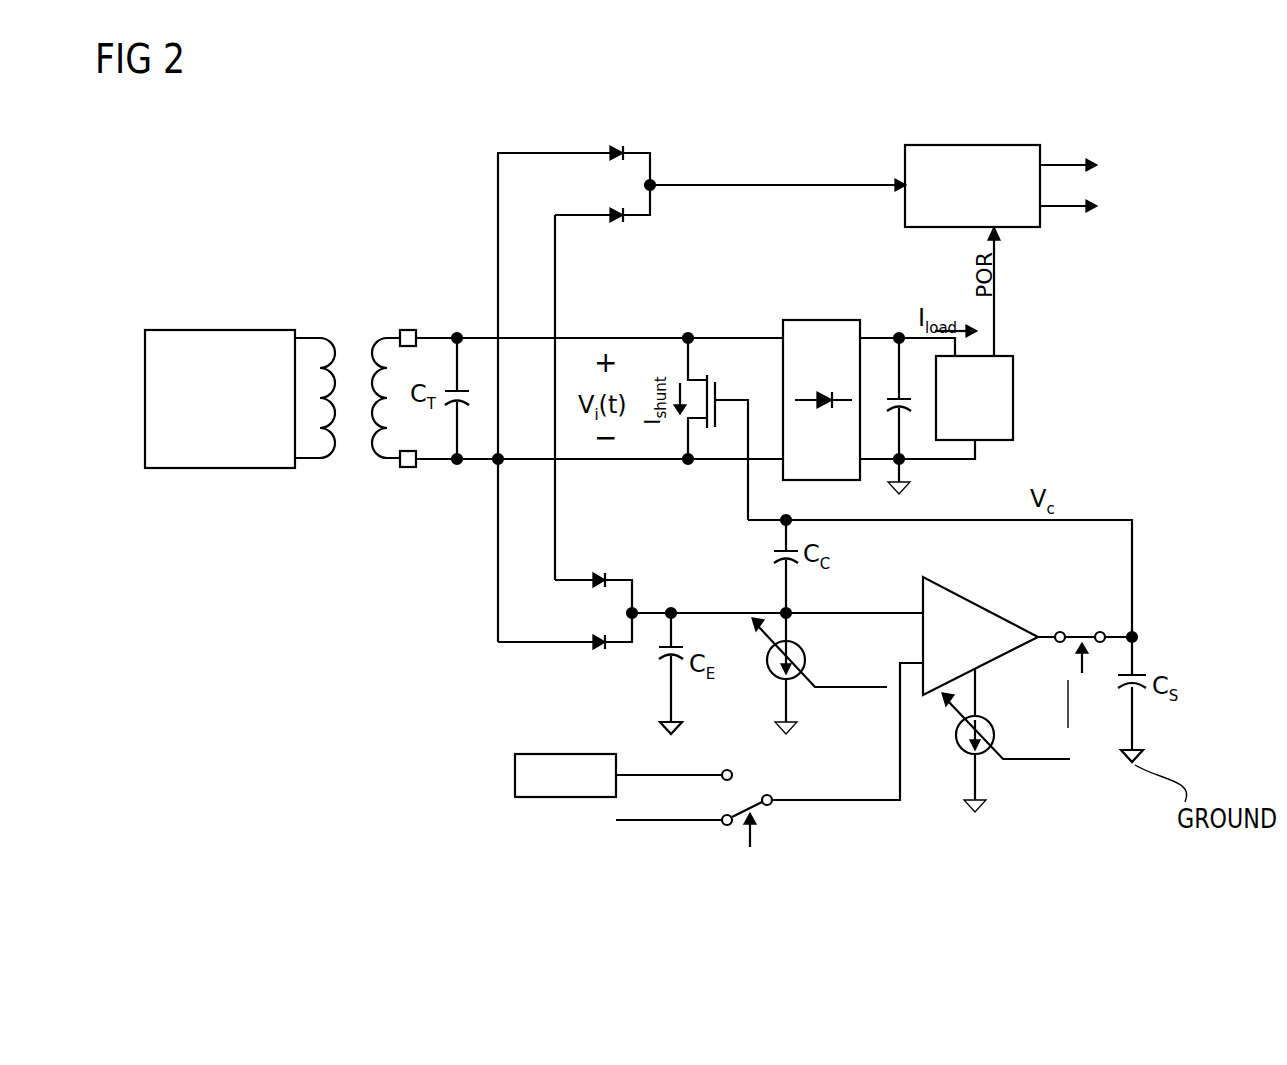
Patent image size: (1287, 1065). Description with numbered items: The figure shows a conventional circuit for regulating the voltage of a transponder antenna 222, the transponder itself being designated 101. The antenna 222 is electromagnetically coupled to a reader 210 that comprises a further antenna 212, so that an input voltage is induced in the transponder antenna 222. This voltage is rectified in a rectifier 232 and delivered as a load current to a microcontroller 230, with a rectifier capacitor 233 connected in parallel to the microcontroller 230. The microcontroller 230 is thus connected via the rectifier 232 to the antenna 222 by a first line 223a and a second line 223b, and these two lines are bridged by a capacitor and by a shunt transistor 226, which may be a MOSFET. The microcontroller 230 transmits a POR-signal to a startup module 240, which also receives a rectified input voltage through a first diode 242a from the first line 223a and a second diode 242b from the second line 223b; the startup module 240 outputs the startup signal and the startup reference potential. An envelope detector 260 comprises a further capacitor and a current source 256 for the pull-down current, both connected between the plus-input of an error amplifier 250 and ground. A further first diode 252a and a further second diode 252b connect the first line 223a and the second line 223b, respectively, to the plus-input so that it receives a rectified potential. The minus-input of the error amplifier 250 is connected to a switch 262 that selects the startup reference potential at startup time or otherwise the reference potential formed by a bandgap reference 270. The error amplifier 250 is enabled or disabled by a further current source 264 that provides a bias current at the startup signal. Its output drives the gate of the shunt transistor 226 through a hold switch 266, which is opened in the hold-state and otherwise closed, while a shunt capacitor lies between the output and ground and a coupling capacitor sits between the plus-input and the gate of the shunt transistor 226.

The transponder 101 is at (468, 600).
The reader 210 is at (210, 328).
The further antenna 212 is at (318, 340).
The antenna 222 is at (387, 340).
The first line 223a is at (478, 462).
The second line 223b is at (527, 343).
The shunt transistor 226 is at (672, 355).
The microcontroller 230 is at (1013, 365).
The rectifier 232 is at (833, 332).
The rectifier capacitor 233 is at (897, 395).
The startup module 240 is at (985, 150).
The first diode 242a is at (610, 153).
The second diode 242b is at (610, 215).
The error amplifier 250 is at (980, 618).
The further first diode 252a is at (598, 648).
The further second diode 252b is at (600, 575).
The current source 256 is at (802, 645).
The envelope detector 260 is at (727, 706).
The switch 262 is at (722, 841).
The further current source 264 is at (982, 758).
The hold switch 266 is at (1092, 618).
The bandgap reference 270 is at (530, 797).